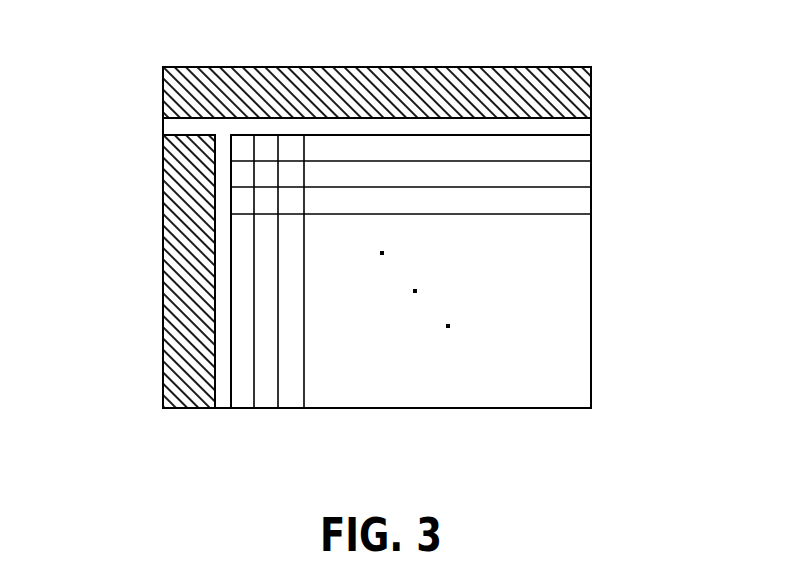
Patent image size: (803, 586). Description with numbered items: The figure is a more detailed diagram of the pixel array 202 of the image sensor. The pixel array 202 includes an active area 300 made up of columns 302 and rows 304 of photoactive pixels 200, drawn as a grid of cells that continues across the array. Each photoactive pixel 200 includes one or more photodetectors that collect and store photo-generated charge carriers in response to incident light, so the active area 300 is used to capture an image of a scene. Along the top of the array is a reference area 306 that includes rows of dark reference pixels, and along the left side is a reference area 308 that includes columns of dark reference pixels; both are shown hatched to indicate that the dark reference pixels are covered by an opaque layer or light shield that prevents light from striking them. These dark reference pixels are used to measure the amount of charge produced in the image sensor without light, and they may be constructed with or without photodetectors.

The photoactive pixel 200 is at (270, 151).
The pixel array 202 is at (130, 83).
The active area 300 is at (590, 298).
The columns 302 is at (294, 428).
The rows 304 is at (604, 202).
The reference area 306 is at (591, 88).
The reference area 308 is at (190, 408).